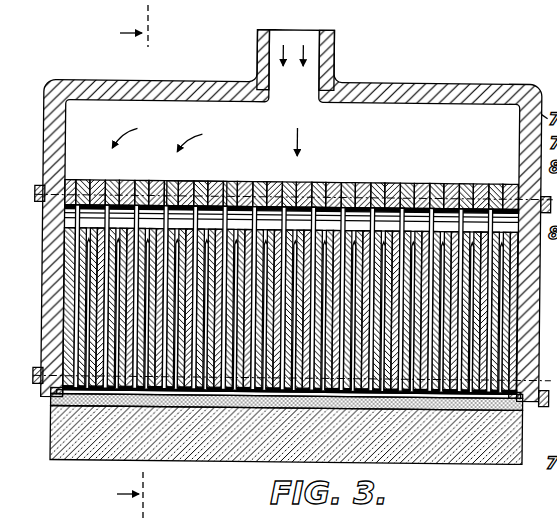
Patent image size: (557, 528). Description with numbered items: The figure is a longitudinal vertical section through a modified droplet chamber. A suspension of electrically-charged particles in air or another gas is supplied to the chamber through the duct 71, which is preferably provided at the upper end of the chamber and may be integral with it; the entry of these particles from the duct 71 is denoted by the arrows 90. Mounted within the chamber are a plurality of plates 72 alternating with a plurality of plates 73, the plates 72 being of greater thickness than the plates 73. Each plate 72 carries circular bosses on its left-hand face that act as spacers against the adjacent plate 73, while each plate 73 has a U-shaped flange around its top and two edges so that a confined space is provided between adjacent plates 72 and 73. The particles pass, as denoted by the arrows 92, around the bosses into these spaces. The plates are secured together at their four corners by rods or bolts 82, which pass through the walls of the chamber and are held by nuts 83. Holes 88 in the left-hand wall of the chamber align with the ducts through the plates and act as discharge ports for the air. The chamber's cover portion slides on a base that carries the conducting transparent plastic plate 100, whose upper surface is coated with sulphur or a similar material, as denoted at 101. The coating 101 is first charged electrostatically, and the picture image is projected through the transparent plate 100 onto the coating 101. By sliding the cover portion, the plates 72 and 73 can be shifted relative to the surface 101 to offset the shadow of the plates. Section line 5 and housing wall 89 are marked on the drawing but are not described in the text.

The section line 5- 5 is at (121, 262).
The duct 71 is at (325, 52).
The plates 72 is at (160, 181).
The plates 73 is at (204, 181).
The rods or bolts 82 is at (39, 186).
The nuts 83 is at (542, 404).
The holes 88 is at (46, 224).
The housing 89 is at (50, 136).
The arrows 90 is at (277, 50).
The arrows 92 is at (405, 162).
The conducting transparent plastic plate 100 is at (395, 457).
The coating 101 is at (56, 398).